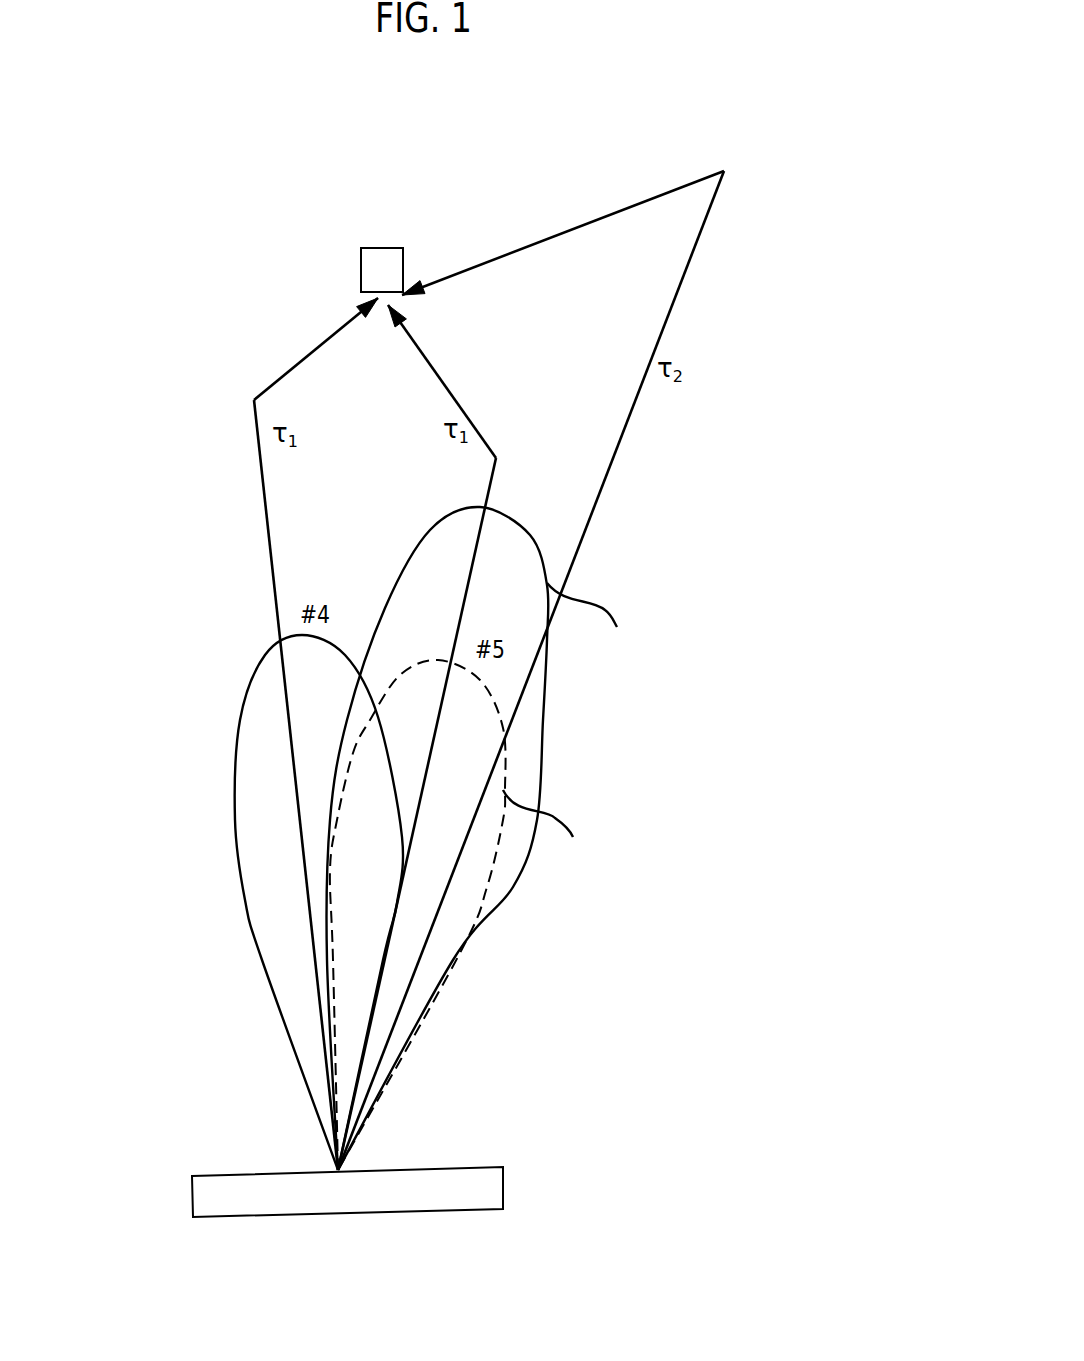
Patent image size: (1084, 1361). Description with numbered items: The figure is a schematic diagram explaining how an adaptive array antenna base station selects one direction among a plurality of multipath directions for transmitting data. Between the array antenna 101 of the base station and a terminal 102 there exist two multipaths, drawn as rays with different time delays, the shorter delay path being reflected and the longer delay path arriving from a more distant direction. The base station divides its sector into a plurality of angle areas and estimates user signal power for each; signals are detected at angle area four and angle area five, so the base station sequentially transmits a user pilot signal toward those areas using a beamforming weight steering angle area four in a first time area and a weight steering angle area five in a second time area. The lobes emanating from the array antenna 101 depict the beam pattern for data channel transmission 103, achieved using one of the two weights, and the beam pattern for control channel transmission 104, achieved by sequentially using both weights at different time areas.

The array antenna 101 is at (428, 1255).
The terminal 102 is at (375, 208).
The beam pattern for data channel transmission 103 is at (788, 595).
The beam pattern for control channel transmission 104 is at (737, 803).